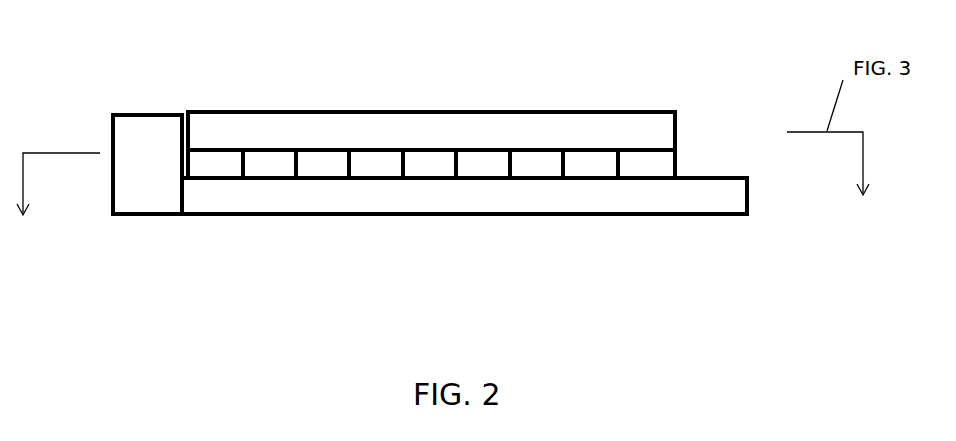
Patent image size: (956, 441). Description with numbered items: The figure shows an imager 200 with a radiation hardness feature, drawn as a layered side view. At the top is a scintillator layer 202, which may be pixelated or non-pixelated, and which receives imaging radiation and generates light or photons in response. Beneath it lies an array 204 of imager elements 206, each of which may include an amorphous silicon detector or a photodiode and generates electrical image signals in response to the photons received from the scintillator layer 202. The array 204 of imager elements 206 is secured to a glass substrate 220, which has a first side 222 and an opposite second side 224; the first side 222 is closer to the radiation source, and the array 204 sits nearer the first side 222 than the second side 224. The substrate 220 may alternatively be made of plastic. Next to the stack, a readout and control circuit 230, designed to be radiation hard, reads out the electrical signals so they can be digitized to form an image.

The imager 200 is at (673, 65).
The scintillator layer 202 is at (320, 110).
The array of imager elements 204 is at (723, 153).
The imager element 206 is at (657, 160).
The glass substrate 220 is at (397, 213).
The first side 222 is at (688, 173).
The second side 224 is at (695, 213).
The readout and control circuit 230 is at (148, 217).